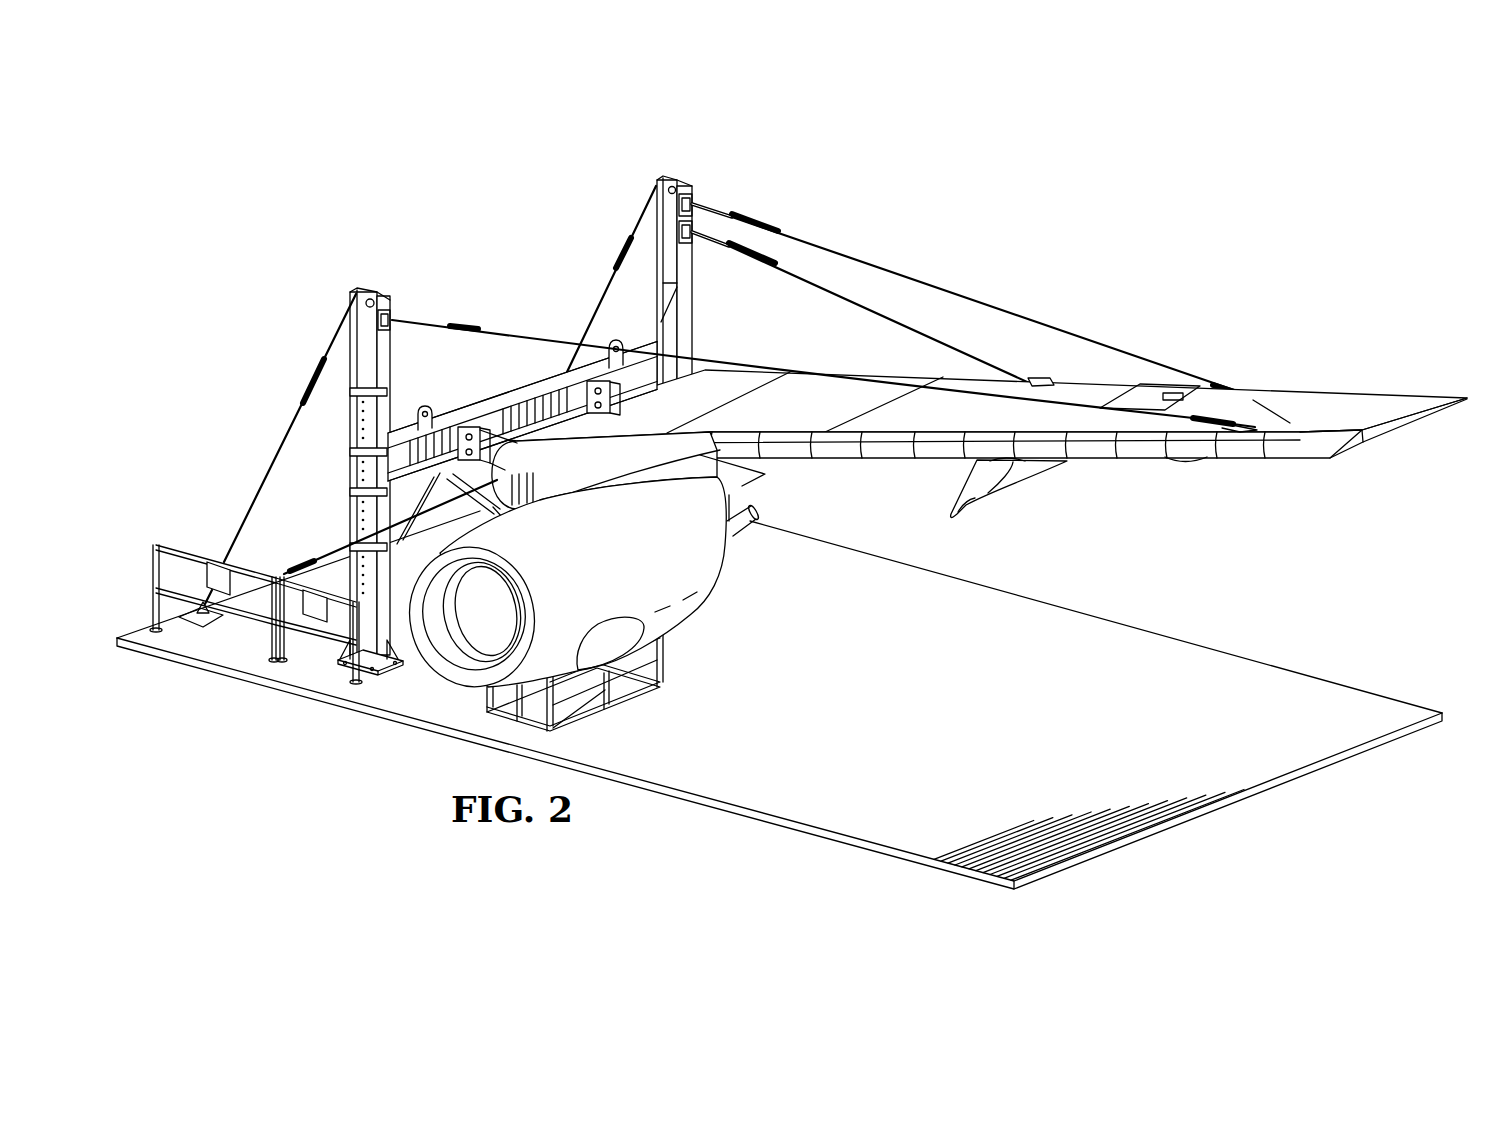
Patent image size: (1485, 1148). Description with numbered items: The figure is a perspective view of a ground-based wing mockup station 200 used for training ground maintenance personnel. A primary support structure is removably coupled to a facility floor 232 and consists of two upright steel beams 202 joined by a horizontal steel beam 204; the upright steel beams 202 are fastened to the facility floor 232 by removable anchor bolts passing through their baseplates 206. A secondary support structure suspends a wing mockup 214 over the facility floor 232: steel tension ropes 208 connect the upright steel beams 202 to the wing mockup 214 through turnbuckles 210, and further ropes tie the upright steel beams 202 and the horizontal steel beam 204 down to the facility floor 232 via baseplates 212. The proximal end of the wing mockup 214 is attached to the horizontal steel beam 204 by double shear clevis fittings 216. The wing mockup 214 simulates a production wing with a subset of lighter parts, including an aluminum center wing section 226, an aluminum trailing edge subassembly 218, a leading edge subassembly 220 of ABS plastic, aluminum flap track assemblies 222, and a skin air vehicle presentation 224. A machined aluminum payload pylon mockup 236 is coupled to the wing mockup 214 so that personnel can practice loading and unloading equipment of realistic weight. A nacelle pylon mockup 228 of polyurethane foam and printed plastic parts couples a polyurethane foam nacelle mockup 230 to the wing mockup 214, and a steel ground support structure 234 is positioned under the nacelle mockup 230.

The wing mockup station 200 is at (1030, 171).
The upright steel beams 202 is at (376, 291).
The horizontal steel beam 204 is at (458, 413).
The baseplates 206 is at (391, 672).
The steel tension ropes 208 is at (293, 421).
The turnbuckles 210 is at (487, 326).
The baseplates 212 is at (200, 605).
The wing mockup 214 is at (979, 405).
The double shear clevis fittings 216 is at (640, 368).
The trailing edge subassembly 218 is at (1376, 392).
The leading edge subassembly 220 is at (1240, 458).
The flap track assemblies 222 is at (1041, 376).
The skin air vehicle presentation 224 is at (1285, 393).
The center wing section 226 is at (1386, 447).
The nacelle pylon mockup 228 is at (755, 482).
The nacelle mockup 230 is at (728, 590).
The facility floor 232 is at (1164, 628).
The steel ground support structure 234 is at (665, 668).
The payload pylon mockup 236 is at (1033, 478).